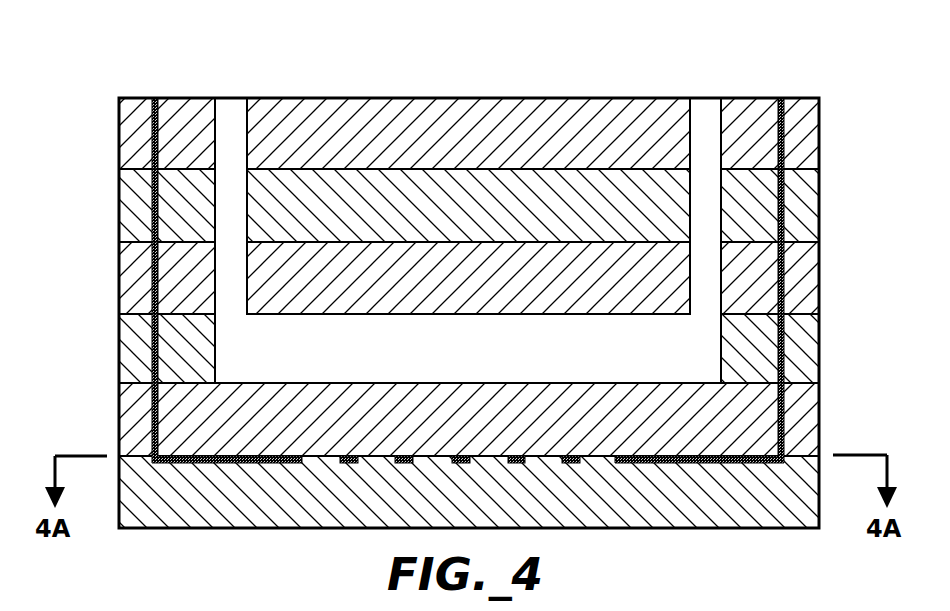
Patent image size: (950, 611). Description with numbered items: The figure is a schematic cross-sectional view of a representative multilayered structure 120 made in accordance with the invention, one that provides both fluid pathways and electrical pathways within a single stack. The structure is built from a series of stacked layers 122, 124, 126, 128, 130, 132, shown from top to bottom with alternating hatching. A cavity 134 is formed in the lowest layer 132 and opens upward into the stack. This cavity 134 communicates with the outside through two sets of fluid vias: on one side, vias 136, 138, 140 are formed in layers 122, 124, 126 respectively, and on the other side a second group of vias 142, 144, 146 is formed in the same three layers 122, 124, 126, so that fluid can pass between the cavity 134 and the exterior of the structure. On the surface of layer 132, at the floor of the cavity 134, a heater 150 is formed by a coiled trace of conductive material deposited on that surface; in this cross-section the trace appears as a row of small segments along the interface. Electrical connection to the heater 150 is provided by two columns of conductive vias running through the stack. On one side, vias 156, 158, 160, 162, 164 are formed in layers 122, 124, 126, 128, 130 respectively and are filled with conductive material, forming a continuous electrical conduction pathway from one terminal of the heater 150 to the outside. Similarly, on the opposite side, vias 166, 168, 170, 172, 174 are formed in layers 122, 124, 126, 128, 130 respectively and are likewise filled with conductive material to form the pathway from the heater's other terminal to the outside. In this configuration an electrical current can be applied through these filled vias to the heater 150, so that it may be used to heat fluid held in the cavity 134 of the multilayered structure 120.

The multilayered structure 120 is at (120, 52).
The layer 122 is at (808, 138).
The layer 124 is at (808, 210).
The layer 126 is at (808, 292).
The layer 128 is at (807, 372).
The layer 130 is at (810, 423).
The layer 132 is at (773, 514).
The cavity 134 is at (486, 358).
The via 136 is at (227, 157).
The via 138 is at (227, 225).
The via 140 is at (225, 303).
The via 142 is at (707, 112).
The via 144 is at (707, 200).
The via 146 is at (707, 283).
The heater 150 is at (348, 463).
The via 156 is at (153, 116).
The via 158 is at (152, 192).
The via 160 is at (152, 258).
The via 162 is at (152, 358).
The via 164 is at (152, 422).
The via 166 is at (780, 102).
The via 168 is at (785, 182).
The via 170 is at (787, 258).
The via 172 is at (805, 342).
The via 174 is at (790, 410).